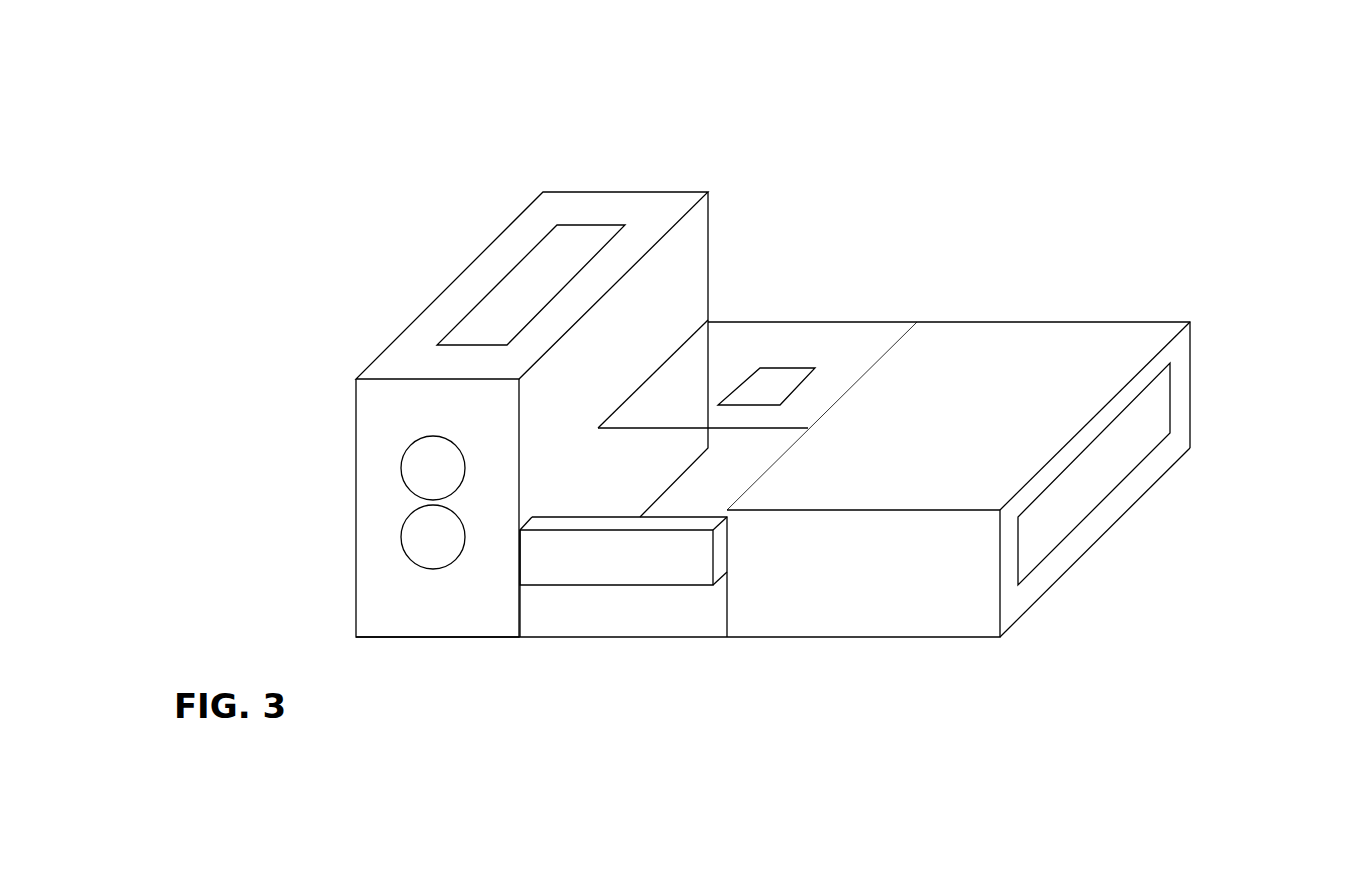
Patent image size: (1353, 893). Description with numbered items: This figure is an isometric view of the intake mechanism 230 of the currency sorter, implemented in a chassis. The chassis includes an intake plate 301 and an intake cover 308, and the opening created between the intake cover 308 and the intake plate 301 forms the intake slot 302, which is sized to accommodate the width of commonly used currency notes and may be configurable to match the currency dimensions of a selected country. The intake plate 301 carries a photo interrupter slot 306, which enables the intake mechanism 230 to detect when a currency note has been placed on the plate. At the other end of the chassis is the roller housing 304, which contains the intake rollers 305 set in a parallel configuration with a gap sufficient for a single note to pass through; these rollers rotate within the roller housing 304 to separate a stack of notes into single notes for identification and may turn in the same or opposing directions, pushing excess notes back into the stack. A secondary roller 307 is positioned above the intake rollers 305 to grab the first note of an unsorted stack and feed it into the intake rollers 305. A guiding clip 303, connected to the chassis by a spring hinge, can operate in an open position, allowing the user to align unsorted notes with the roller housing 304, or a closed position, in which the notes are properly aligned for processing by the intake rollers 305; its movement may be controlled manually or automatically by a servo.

The intake mechanism 230 is at (1088, 170).
The intake plate 301 is at (1077, 522).
The intake slot 302 is at (1142, 427).
The guiding clip 303 is at (662, 570).
The roller housing 304 is at (355, 603).
The intake rollers 305 is at (401, 534).
The photo interrupter slot 306 is at (766, 380).
The secondary roller 307 is at (583, 235).
The intake cover 308 is at (1057, 344).